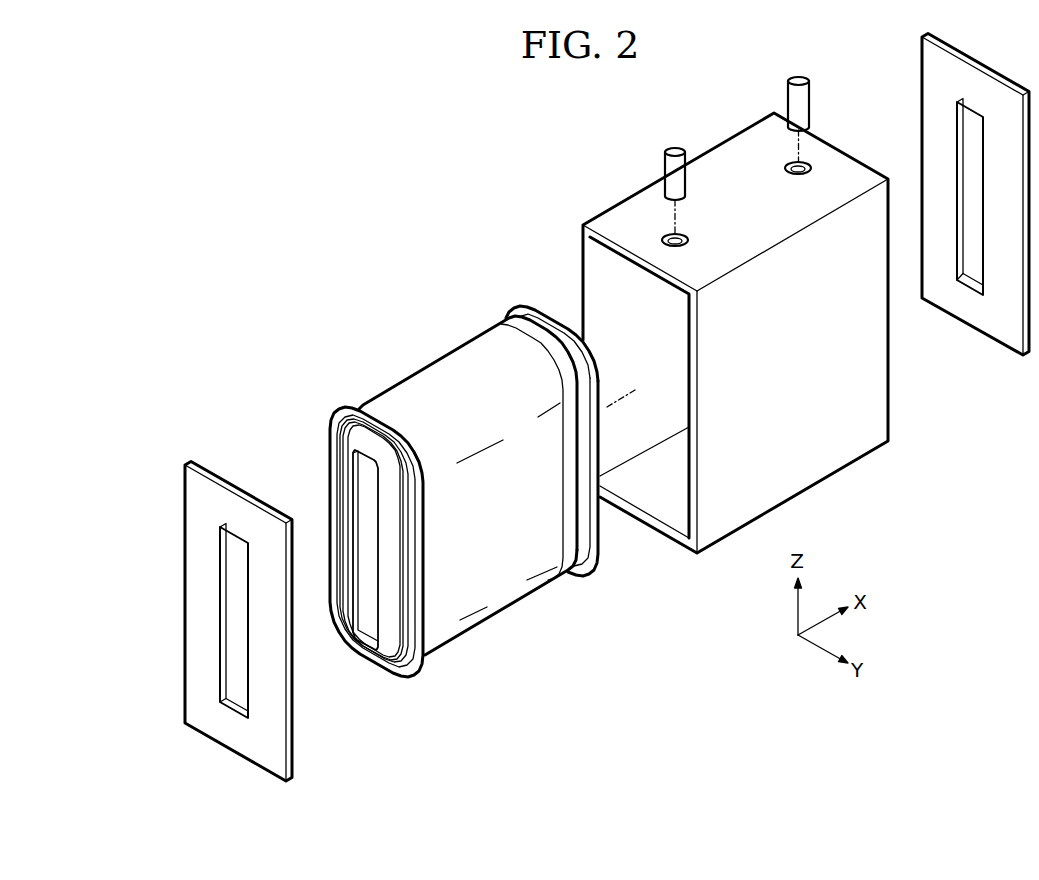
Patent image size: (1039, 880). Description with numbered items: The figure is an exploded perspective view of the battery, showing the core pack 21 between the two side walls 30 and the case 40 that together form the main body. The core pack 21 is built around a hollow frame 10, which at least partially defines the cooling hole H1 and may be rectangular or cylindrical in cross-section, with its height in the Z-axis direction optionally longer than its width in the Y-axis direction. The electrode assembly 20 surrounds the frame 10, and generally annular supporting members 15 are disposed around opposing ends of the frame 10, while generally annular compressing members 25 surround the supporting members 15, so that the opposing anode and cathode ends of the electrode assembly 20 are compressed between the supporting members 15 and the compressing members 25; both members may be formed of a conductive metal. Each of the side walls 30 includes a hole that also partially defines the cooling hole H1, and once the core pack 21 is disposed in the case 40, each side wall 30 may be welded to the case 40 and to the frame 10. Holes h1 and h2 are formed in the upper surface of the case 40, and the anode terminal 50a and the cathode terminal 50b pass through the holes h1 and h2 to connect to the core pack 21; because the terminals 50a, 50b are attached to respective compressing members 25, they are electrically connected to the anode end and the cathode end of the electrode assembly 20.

The frame 10 is at (352, 472).
The supporting members 15 is at (335, 433).
The electrode assembly 20 is at (470, 348).
The core pack 21 is at (440, 465).
The compressing members 25 is at (355, 407).
The side walls 30 is at (191, 462).
The case 40 is at (874, 446).
The anode terminal 50a is at (672, 150).
The cathode terminal 50b is at (797, 77).
The hole h1 is at (669, 235).
The hole h2 is at (792, 163).
The cooling hole H1 is at (369, 604).